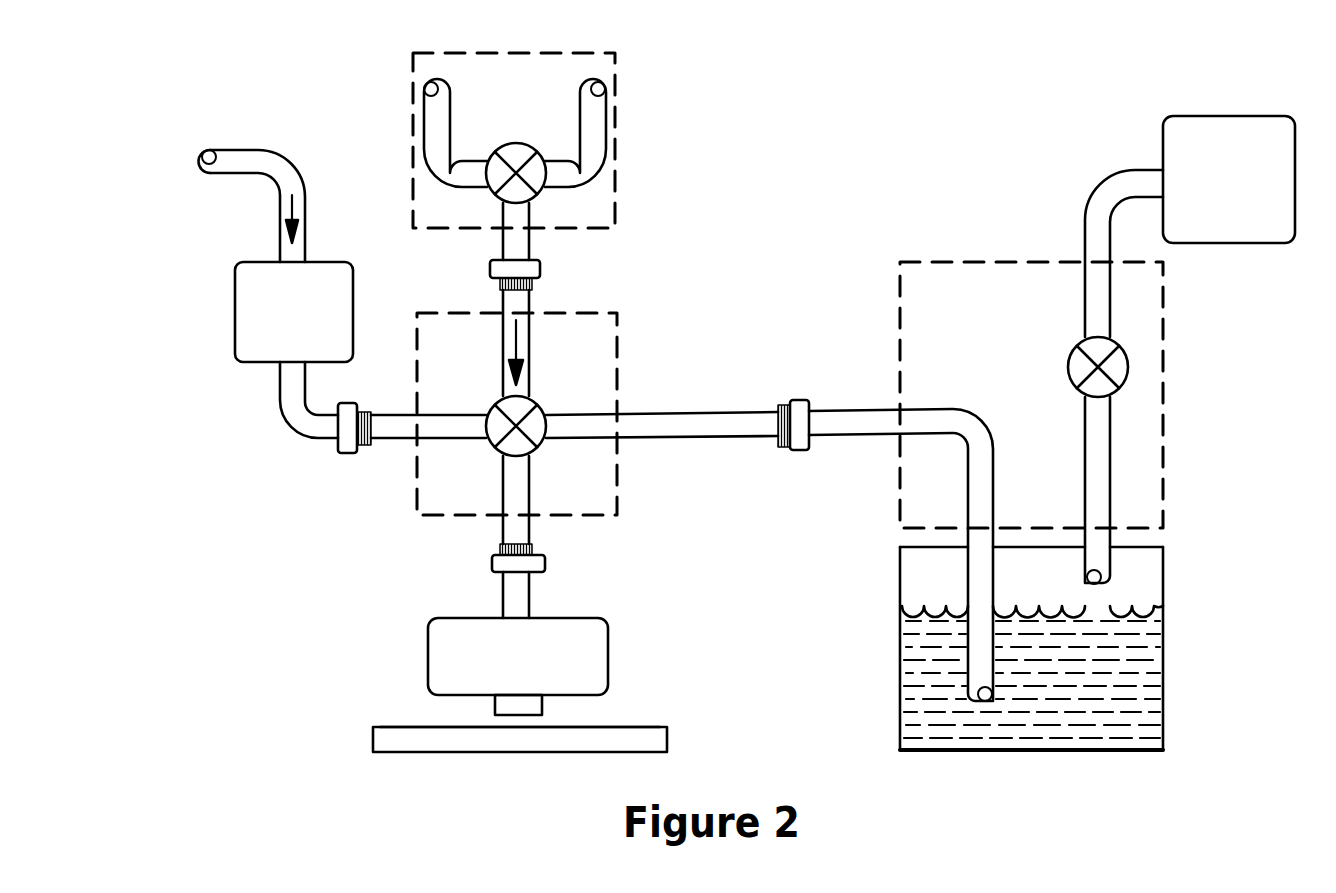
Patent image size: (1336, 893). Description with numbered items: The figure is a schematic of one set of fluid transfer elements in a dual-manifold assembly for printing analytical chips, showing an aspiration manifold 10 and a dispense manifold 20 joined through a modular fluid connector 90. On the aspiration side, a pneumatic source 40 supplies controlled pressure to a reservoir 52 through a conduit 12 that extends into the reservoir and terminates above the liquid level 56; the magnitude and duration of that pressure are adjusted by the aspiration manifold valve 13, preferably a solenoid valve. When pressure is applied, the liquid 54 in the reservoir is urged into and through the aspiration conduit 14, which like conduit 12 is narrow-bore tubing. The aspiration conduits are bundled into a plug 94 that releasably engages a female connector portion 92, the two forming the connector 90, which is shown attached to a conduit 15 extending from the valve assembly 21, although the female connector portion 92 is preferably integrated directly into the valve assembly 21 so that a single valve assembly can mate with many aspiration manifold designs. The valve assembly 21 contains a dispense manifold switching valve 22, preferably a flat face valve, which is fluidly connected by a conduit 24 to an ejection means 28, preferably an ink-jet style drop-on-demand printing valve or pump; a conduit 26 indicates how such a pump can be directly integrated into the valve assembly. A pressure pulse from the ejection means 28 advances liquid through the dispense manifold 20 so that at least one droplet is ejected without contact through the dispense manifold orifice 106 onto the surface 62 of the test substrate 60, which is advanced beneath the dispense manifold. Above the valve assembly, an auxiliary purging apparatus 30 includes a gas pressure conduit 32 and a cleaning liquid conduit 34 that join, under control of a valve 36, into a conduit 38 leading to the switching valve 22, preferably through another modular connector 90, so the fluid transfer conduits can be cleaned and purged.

The aspiration manifold 10 is at (1166, 349).
The conduit 12 is at (1098, 181).
The aspiration manifold valve 13 is at (1083, 346).
The aspiration conduit 14 is at (972, 506).
The conduit 15 is at (557, 441).
The dispense manifold 20 is at (518, 656).
The valve assembly 21 is at (620, 343).
The dispense manifold switching valve 22 is at (537, 410).
The conduit 24 is at (300, 421).
The conduit 26 is at (524, 474).
The ejection means 28 is at (294, 312).
The auxiliary apparatus 30 is at (575, 53).
The gas pressure conduit 32 is at (445, 119).
The cleaning liquid conduit 34 is at (598, 118).
The valve 36 is at (536, 192).
The conduit 38 is at (503, 324).
The pneumatic source 40 is at (1229, 179).
The reservoir 52 is at (1166, 566).
The liquid 54 is at (1150, 686).
The liquid level 56 is at (1150, 606).
The test substrate 60 is at (564, 729).
The target substrate surface 62 is at (625, 727).
The modular fluid connector 90 is at (603, 433).
The female connector portion 92 is at (783, 448).
The plug 94 is at (801, 452).
The dispense manifold orifice 106 is at (495, 708).